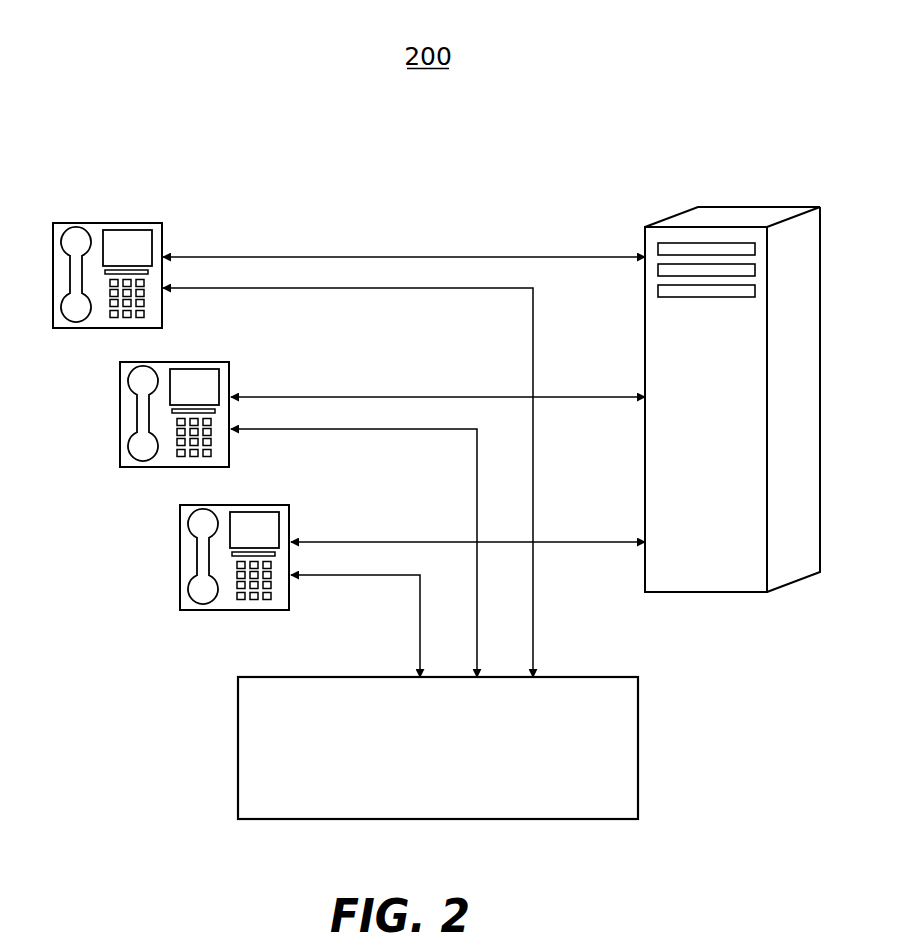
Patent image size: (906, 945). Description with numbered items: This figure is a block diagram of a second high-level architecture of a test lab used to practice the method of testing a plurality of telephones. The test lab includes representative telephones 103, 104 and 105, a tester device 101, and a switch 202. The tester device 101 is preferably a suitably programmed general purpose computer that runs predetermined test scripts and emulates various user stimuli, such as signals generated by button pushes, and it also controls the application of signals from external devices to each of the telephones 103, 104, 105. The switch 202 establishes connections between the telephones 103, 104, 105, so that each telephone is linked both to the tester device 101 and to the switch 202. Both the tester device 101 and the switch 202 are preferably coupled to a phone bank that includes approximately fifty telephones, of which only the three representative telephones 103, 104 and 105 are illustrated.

The tester device 101 is at (238, 757).
The telephone 103 is at (105, 222).
The telephone 104 is at (120, 397).
The telephone 105 is at (180, 545).
The switch 202 is at (730, 207).